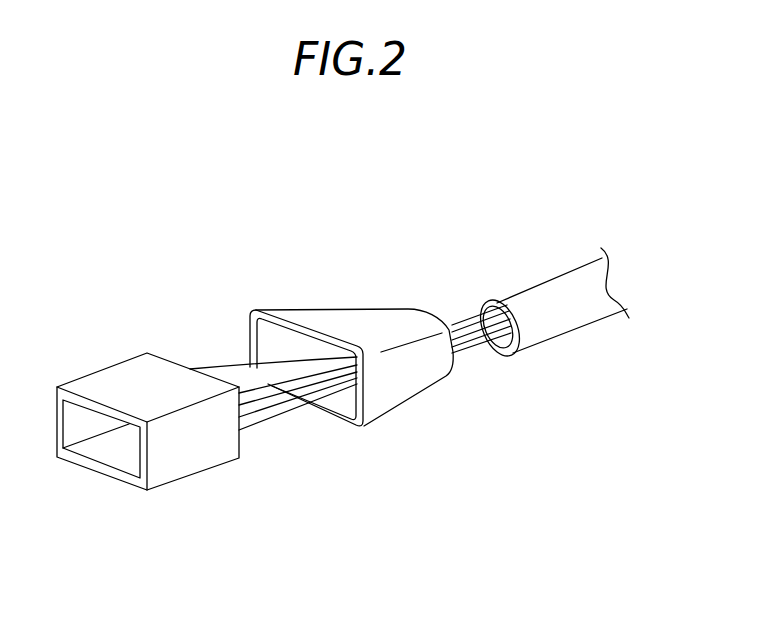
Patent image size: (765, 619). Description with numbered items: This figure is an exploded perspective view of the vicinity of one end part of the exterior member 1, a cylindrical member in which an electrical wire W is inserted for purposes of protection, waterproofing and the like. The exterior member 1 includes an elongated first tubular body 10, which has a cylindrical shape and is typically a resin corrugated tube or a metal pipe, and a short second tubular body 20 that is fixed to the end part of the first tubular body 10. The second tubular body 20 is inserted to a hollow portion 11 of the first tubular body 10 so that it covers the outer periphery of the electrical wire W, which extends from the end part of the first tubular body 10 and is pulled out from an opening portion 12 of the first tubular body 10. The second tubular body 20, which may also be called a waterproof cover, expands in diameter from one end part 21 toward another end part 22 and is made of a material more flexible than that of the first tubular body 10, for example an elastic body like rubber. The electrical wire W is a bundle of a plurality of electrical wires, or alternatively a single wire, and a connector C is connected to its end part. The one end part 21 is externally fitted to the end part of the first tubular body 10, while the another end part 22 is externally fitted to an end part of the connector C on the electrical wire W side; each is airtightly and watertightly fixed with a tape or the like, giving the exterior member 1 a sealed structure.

The exterior member 1 is at (523, 232).
The first tubular body 10 is at (553, 340).
The hollow portion 11 is at (502, 346).
The opening portion 12 is at (483, 307).
The second tubular body 20 is at (402, 410).
The one end part 21 is at (427, 318).
The another end part 22 is at (279, 321).
The electrical wire W is at (213, 368).
The connector C is at (202, 472).